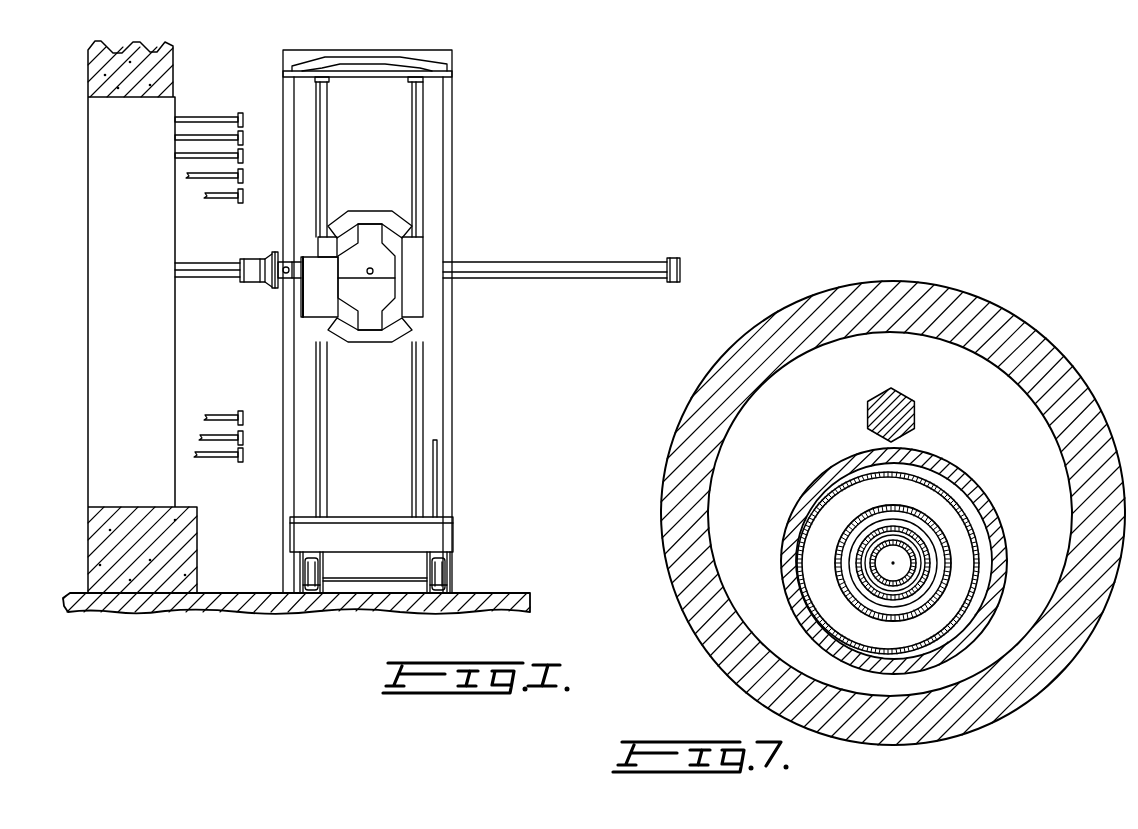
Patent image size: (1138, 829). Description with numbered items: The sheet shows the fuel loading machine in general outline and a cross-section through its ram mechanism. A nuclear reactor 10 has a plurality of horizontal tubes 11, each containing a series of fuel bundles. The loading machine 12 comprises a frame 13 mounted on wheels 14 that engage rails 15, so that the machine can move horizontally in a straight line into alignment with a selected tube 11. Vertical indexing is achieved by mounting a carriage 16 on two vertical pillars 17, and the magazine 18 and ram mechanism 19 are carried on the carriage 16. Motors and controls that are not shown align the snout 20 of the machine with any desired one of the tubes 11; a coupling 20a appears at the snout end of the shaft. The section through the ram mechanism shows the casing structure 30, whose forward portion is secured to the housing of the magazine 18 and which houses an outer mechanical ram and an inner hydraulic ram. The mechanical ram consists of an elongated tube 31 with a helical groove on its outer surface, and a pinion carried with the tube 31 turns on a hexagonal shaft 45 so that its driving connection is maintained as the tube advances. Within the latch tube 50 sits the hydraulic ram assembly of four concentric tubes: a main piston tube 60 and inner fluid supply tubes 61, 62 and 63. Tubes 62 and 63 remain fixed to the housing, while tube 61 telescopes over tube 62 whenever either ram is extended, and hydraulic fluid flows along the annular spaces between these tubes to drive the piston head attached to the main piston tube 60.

In FIG. 1, the nuclear reactor 10 is at (102, 120).
In FIG. 1, the horizontal tubes 11 is at (217, 127).
In FIG. 1, the loading machine 12 is at (480, 98).
In FIG. 1, the frame 13 is at (447, 533).
In FIG. 1, the wheels 14 is at (430, 562).
In FIG. 1, the rails 15 is at (320, 607).
In FIG. 1, the carriage 16 is at (367, 215).
In FIG. 1, the vertical pillars 17 is at (433, 413).
In FIG. 1, the magazine 18 is at (320, 289).
In FIG. 1, the ram mechanism 19 is at (473, 262).
In FIG. 1, the snout 20 is at (250, 283).
In FIG. 1, the coupling 20a is at (243, 262).
In FIG. 1, the casing structure 30 is at (543, 273).
In FIG. 7, the casing structure 30 is at (1025, 332).
In FIG. 7, the elongated tube 31 is at (958, 482).
In FIG. 7, the hexagonal shaft 45 is at (878, 396).
In FIG. 7, the latch tube 50 is at (972, 516).
In FIG. 7, the main piston tube 60 is at (853, 527).
In FIG. 7, the inner fluid supply tube 61 is at (855, 540).
In FIG. 7, the inner fluid supply tube 62 is at (920, 555).
In FIG. 7, the inner fluid supply tube 63 is at (913, 573).